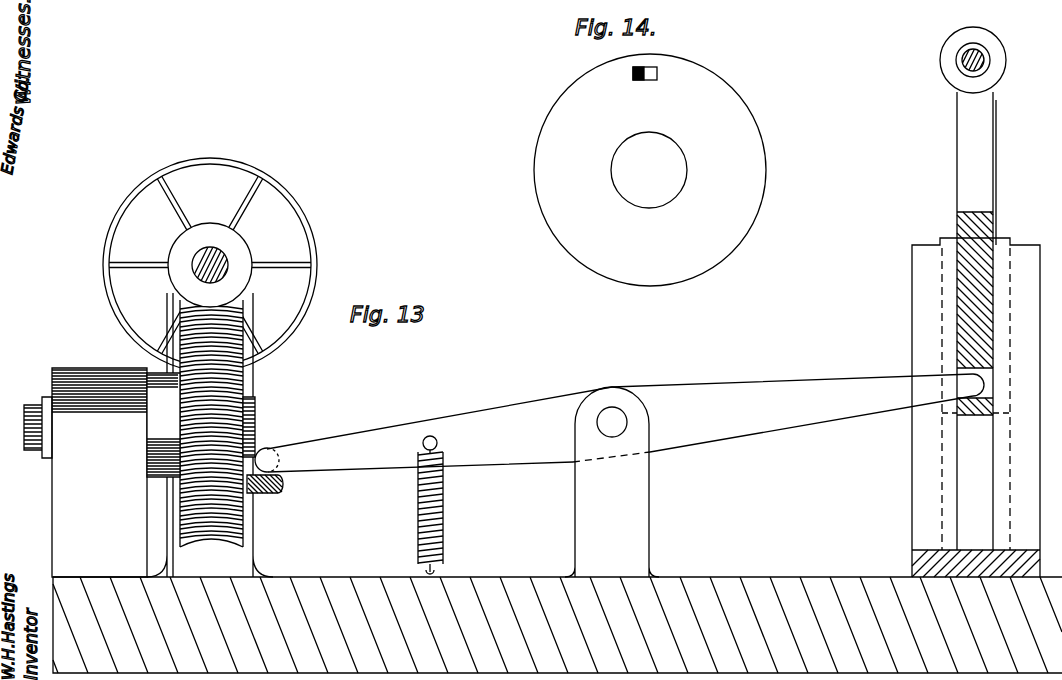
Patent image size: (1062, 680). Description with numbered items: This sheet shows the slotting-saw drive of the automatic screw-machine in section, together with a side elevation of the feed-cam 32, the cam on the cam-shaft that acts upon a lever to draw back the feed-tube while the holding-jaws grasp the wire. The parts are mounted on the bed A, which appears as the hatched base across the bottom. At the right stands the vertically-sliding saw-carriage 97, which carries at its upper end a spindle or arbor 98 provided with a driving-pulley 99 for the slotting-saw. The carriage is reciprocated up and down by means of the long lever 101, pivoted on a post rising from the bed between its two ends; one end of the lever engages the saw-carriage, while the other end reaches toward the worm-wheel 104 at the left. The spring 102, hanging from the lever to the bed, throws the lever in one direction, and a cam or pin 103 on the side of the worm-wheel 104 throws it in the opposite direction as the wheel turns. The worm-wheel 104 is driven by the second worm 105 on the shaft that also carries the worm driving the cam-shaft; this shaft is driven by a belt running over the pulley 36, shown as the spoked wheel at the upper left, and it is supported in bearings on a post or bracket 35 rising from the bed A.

In FIG. 13, the bed A is at (557, 611).
In FIG. 14, the cam 32 is at (650, 170).
In FIG. 13, the frame 35 is at (167, 298).
In FIG. 13, the pulley 36 is at (112, 240).
In FIG. 13, the vertically-sliding saw-carriage 97 is at (957, 219).
In FIG. 13, the spindle or arbor 98 is at (963, 54).
In FIG. 13, the driving-pulley 99 is at (1006, 67).
In FIG. 13, the lever 101 is at (619, 475).
In FIG. 13, the spring 102 is at (417, 518).
In FIG. 13, the cam or pin 103 is at (277, 494).
In FIG. 13, the worm-wheel 104 is at (247, 393).
In FIG. 13, the second worm 105 is at (210, 265).